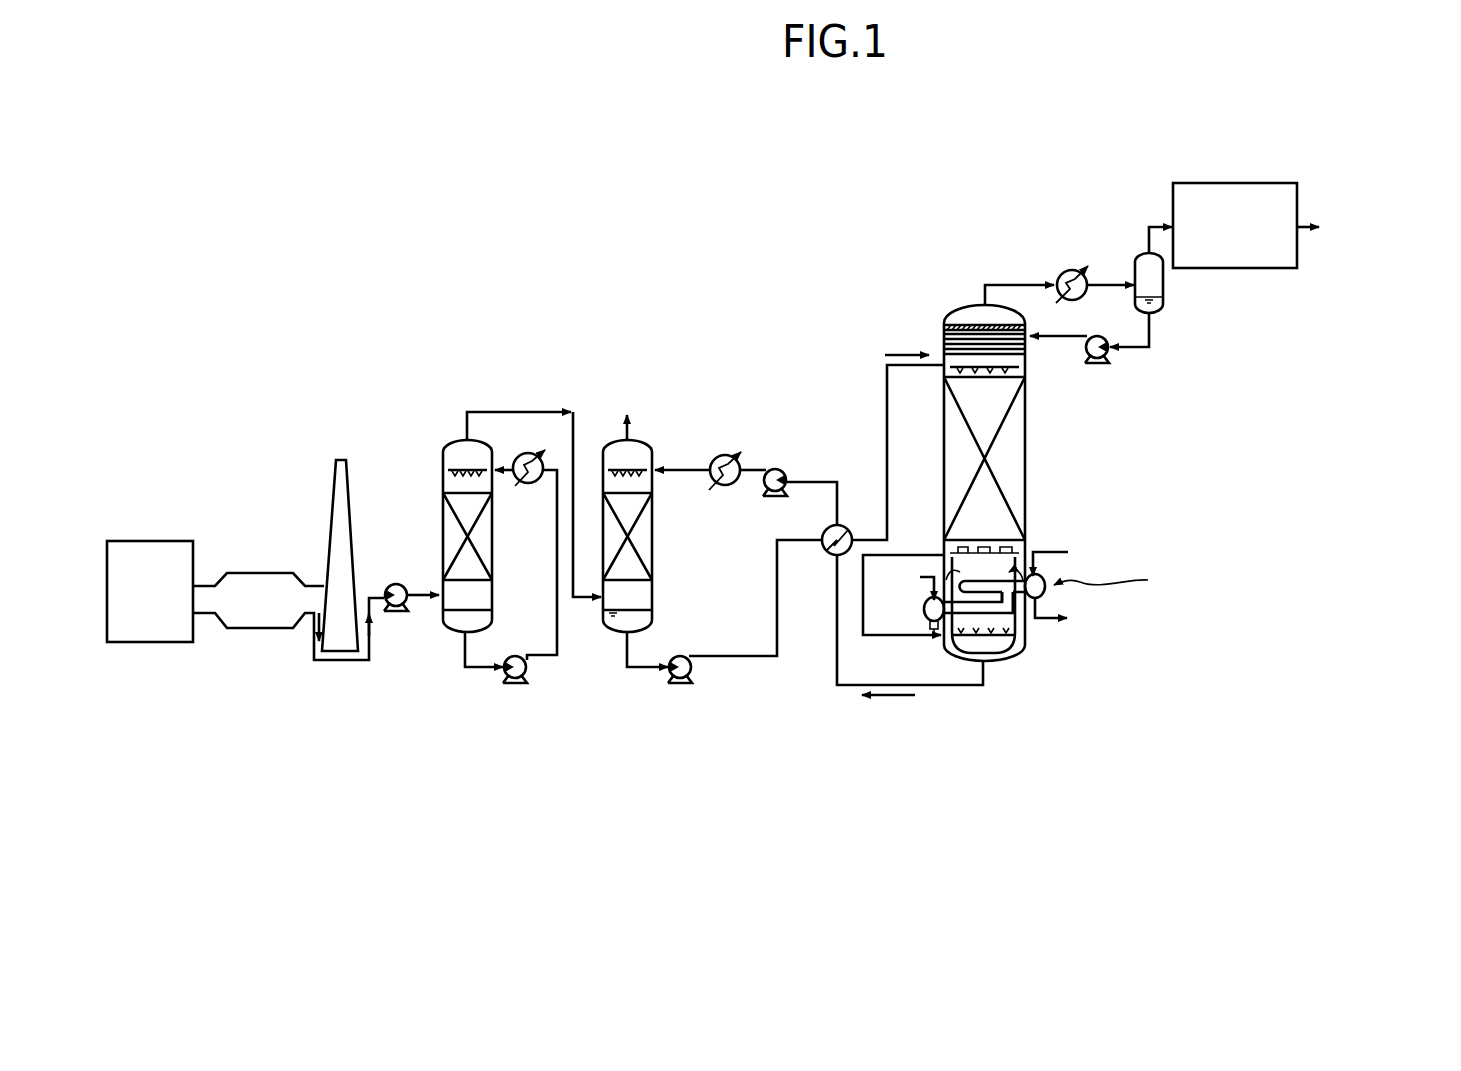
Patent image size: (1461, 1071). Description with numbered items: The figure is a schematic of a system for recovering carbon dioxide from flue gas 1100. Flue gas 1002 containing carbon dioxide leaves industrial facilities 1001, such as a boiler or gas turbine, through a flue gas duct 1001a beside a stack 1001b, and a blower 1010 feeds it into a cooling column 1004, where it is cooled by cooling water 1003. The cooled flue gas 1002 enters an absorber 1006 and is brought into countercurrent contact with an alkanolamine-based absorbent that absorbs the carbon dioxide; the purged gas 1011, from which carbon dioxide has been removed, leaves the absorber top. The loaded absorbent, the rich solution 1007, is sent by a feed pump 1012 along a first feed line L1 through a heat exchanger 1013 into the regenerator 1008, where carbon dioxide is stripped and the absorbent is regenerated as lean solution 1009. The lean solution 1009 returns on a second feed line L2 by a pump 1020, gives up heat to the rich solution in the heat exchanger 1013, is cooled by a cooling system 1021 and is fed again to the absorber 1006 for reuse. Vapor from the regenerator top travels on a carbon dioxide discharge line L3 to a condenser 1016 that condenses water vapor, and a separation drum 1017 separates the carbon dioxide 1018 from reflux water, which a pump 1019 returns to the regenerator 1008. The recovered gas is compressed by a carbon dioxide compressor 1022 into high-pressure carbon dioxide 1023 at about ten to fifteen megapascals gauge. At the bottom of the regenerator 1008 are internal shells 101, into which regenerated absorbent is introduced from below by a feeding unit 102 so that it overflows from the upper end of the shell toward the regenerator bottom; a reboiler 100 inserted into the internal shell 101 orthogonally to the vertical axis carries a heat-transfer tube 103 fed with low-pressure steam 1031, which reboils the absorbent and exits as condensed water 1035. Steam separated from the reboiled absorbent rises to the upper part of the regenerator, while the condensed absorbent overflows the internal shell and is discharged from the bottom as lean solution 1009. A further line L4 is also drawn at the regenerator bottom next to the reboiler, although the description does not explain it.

The system for recovering carbon dioxide from flue gas 1100 is at (605, 242).
The industrial facilities 1001 is at (172, 540).
The flue gas duct 1001a is at (258, 628).
The stack 1001b is at (332, 498).
The flue gas 1002 is at (373, 597).
The cooling water 1003 is at (511, 487).
The cooling column 1004 is at (440, 450).
The absorber 1006 is at (640, 437).
The rich solution 1007 is at (897, 352).
The regenerator 1008 is at (962, 300).
The lean solution 1009 is at (888, 700).
The blower 1010 is at (400, 620).
The purged gas 1011 is at (620, 434).
The feed pump 1012 is at (679, 688).
The heat exchanger 1013 is at (836, 556).
The condenser 1016 is at (1068, 270).
The separation drum 1017 is at (1163, 283).
The carbon dioxide 1018 is at (1162, 224).
The pump 1019 is at (1108, 353).
The pump 1020 is at (777, 470).
The cooling system 1021 is at (721, 490).
The carbon dioxide compressor 1022 is at (1217, 183).
The high-pressure carbon dioxide 1023 is at (1372, 261).
The low-pressure steam 1031 is at (1104, 558).
The condensed water 1035 is at (1169, 625).
The reboiler 100 is at (1065, 595).
The internal shell 101 is at (1017, 627).
The feeding unit 102 is at (984, 650).
The heat-transfer tube 103 is at (1000, 615).
The first feed line L1 is at (757, 656).
The second feed line L2 is at (892, 686).
The carbon dioxide discharge line L3 is at (992, 286).
The semi-lean solution line L4 is at (918, 556).